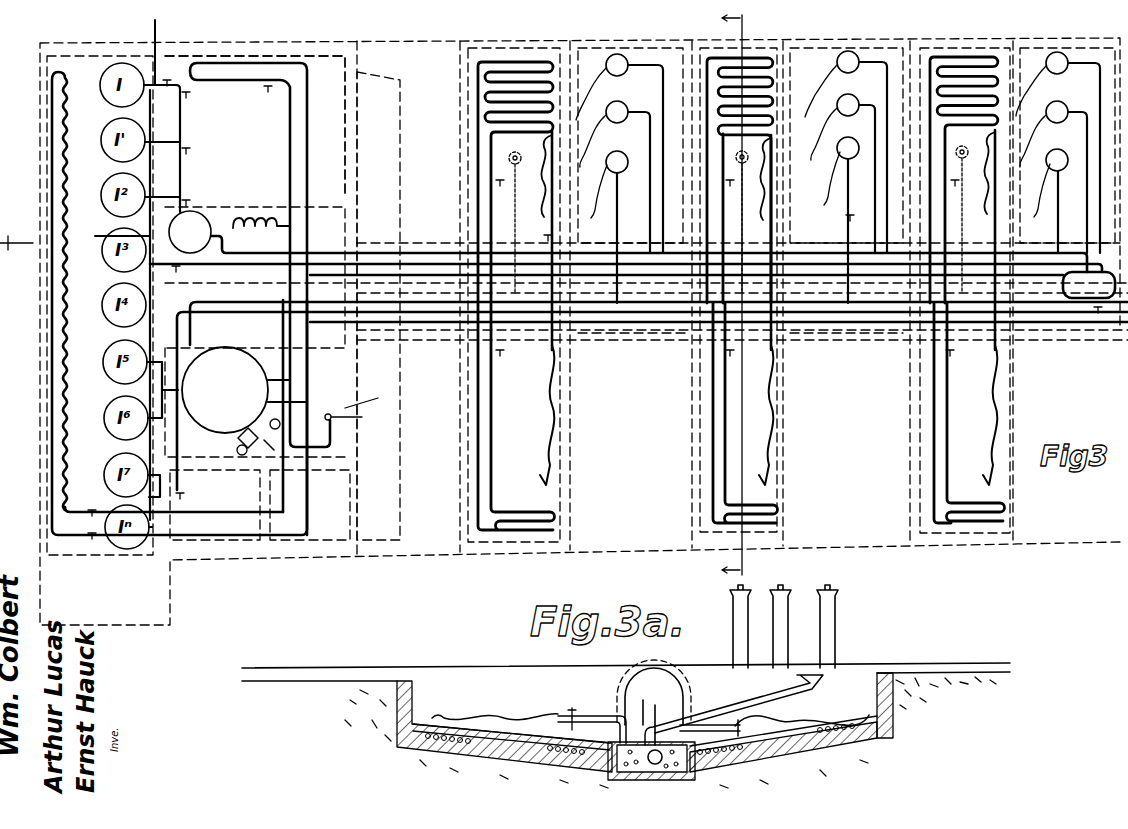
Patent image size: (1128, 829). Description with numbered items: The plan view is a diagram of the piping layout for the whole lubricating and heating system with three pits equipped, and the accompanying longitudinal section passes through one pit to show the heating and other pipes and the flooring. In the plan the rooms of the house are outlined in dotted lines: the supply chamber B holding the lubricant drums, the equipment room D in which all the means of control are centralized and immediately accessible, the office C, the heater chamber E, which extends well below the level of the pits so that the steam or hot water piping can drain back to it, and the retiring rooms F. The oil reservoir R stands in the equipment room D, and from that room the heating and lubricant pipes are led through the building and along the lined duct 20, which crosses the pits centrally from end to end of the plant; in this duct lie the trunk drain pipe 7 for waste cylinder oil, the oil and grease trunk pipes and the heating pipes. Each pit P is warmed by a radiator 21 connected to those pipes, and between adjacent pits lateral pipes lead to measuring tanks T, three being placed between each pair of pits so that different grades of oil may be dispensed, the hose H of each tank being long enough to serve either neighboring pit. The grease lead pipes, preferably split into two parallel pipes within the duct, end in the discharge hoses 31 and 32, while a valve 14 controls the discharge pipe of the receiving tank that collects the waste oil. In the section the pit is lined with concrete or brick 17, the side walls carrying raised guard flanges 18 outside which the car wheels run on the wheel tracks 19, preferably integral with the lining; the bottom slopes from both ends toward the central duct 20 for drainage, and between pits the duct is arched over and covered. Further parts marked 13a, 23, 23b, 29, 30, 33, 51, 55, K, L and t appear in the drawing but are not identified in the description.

In FIG. 3, the trunk drain pipe 7 is at (878, 318).
In FIG. 3A, the trunk drain pipe 7 is at (580, 755).
In FIG. 3, the valve 13a is at (372, 408).
In FIG. 3, the valve 14 is at (328, 414).
In FIG. 3A, the concrete or brick lining 17 is at (570, 708).
In FIG. 3A, the raised flanges 18 is at (466, 667).
In FIG. 3, the wheel tracks 19 is at (717, 294).
In FIG. 3, the lined duct 20 is at (630, 335).
In FIG. 3A, the lined duct 20 is at (640, 682).
In FIG. 3, the radiators 21 is at (520, 62).
In FIG. 3A, the radiators 21 is at (520, 752).
In FIG. 3, the boiler 23 is at (182, 420).
In FIG. 3, the boiler valve 23b is at (246, 428).
In FIG. 3, the branch pipe 29 is at (552, 362).
In FIG. 3A, the branch pipe 29 is at (588, 716).
In FIG. 3, the pipe 30 is at (555, 218).
In FIG. 3A, the pipe 30 is at (690, 717).
In FIG. 3, the discharge hose 31 is at (552, 433).
In FIG. 3A, the discharge hose 31 is at (495, 717).
In FIG. 3, the discharge hose 32 is at (548, 190).
In FIG. 3A, the discharge hose 32 is at (830, 712).
In FIG. 3, the valve 33 is at (520, 236).
In FIG. 3A, the valve 33 is at (573, 712).
In FIG. 3, the steam pipe 51 is at (158, 195).
In FIG. 3, the pipe 55 is at (111, 237).
In FIG. 3, the supply chamber B is at (191, 299).
In FIG. 3, the office C is at (255, 126).
In FIG. 3, the equipment room D is at (229, 285).
In FIG. 3, the heater chamber E is at (345, 398).
In FIG. 3, the retiring rooms F is at (271, 493).
In FIG. 3, the hose H is at (585, 95).
In FIG. 3, the pipe loop K is at (1104, 242).
In FIG. 3, the room L is at (345, 430).
In FIG. 3, the pits P is at (460, 372).
In FIG. 3, the reservoir R is at (628, 241).
In FIG. 3, the supply tanks T is at (853, 177).
In FIG. 3A, the vent tube t is at (790, 626).